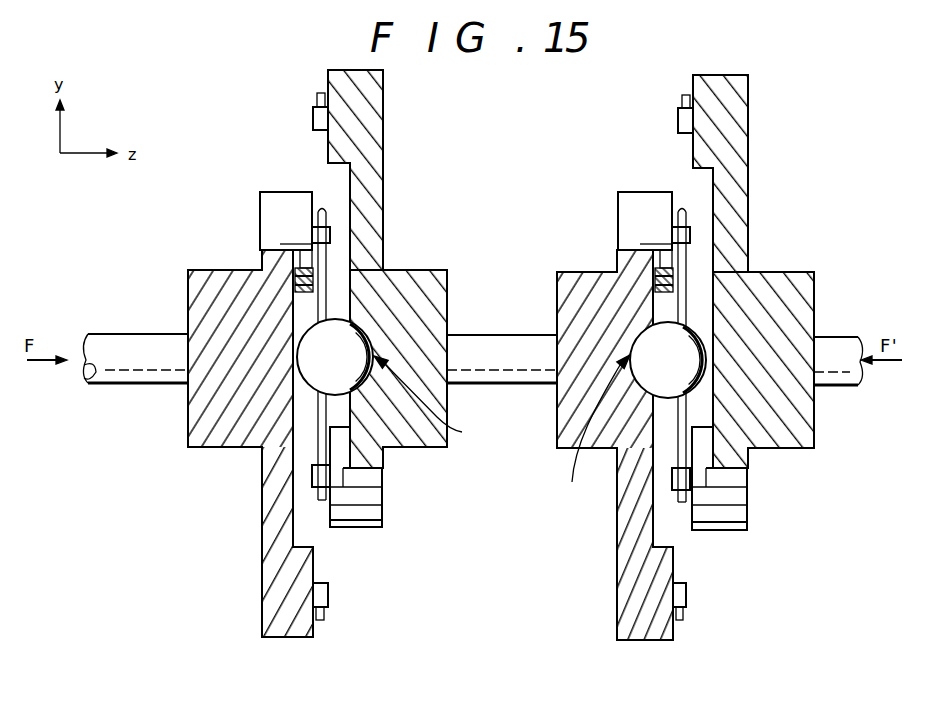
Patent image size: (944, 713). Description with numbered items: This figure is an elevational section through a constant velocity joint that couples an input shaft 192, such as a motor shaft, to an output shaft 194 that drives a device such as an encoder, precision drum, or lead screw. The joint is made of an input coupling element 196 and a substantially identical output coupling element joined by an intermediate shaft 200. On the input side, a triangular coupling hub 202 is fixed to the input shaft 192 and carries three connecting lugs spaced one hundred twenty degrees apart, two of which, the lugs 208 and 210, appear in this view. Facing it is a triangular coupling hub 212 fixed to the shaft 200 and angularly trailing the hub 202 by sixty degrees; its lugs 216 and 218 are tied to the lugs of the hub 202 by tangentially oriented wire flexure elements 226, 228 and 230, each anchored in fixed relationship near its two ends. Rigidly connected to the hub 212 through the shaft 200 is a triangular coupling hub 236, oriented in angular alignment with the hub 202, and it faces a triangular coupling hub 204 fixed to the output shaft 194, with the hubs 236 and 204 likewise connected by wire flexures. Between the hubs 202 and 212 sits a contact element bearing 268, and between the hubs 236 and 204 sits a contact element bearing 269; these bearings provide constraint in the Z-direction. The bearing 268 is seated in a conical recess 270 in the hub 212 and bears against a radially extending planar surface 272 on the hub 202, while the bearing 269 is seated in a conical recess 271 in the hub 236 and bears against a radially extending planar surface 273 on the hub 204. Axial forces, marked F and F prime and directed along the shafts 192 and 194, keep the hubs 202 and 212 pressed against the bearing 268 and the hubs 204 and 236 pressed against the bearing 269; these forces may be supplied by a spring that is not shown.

The input shaft 192 is at (118, 334).
The output shaft 194 is at (830, 338).
The input coupling element 196 is at (478, 222).
The shaft 200 is at (500, 336).
The triangular coupling hub 202 is at (258, 541).
The triangular coupling hub 204 is at (756, 175).
The connecting lug 208 is at (260, 207).
The connecting lug 210 is at (268, 612).
The triangular coupling hub 212 is at (385, 148).
The lug 216 is at (328, 144).
The lug 218 is at (383, 507).
The wire flexure element 226 is at (313, 97).
The wire flexure element 228 is at (325, 270).
The wire flexure element 230 is at (330, 616).
The triangular coupling hub 236 is at (610, 584).
The contact element bearing 268 is at (353, 367).
The contact element bearing 269 is at (686, 370).
The conical recess 270 is at (441, 400).
The conical recess 271 is at (592, 432).
The radially extending planar surface 272 is at (305, 535).
The radially extending planar surface 273 is at (709, 192).